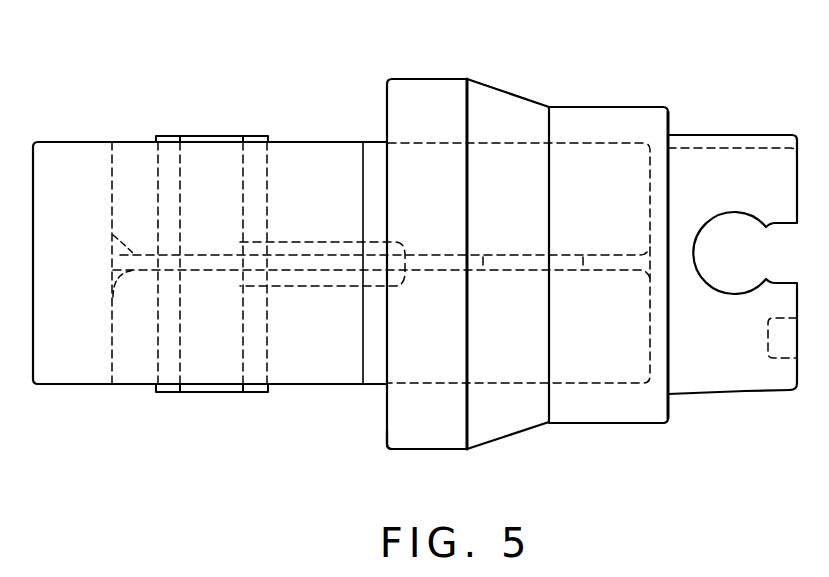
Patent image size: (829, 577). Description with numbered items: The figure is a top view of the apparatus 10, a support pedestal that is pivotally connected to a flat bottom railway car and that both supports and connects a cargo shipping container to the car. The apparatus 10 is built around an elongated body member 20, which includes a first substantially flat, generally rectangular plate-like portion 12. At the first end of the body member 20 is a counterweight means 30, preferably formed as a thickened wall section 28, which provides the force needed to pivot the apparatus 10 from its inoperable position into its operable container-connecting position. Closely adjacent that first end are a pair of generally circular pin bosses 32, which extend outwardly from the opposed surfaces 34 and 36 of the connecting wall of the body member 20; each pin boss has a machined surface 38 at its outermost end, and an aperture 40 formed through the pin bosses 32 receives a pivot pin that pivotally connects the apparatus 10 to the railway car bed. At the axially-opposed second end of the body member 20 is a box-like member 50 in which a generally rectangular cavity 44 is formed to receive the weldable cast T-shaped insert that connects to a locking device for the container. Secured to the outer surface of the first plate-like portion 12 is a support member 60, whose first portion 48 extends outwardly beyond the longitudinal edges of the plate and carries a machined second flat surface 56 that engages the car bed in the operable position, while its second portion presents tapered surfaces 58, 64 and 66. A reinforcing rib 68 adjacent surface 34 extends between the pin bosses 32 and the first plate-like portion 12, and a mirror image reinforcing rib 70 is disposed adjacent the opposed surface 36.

The apparatus 10 is at (335, 125).
The first plate-like portion 12 is at (325, 189).
The elongated body member 20 is at (335, 406).
The thickened wall section 28 is at (82, 150).
The counterweight means 30 is at (52, 136).
The pin bosses 32 is at (265, 170).
The first surface of connecting wall portion 34 is at (113, 235).
The second surface of connecting wall portion 36 is at (113, 297).
The machined surface 38 is at (190, 140).
The aperture 40 is at (243, 152).
The cavity 44 is at (758, 160).
The first portion of support member 48 is at (420, 88).
The box-like member 50 is at (746, 398).
The second flat surface 56 is at (383, 427).
The flat tapered surface 58 is at (373, 153).
The support member 60 is at (528, 89).
The tapered surface 64 is at (510, 437).
The tapered surface 66 is at (502, 102).
The reinforcing rib 68 is at (295, 283).
The mirror image reinforcing rib 70 is at (302, 245).